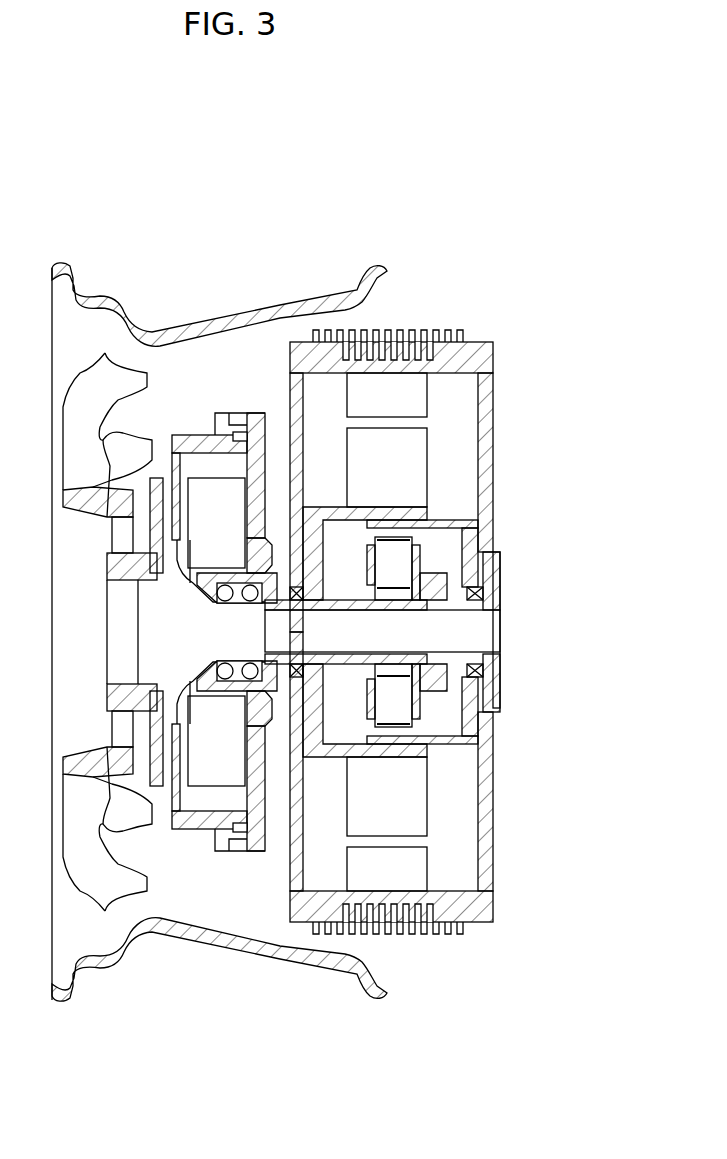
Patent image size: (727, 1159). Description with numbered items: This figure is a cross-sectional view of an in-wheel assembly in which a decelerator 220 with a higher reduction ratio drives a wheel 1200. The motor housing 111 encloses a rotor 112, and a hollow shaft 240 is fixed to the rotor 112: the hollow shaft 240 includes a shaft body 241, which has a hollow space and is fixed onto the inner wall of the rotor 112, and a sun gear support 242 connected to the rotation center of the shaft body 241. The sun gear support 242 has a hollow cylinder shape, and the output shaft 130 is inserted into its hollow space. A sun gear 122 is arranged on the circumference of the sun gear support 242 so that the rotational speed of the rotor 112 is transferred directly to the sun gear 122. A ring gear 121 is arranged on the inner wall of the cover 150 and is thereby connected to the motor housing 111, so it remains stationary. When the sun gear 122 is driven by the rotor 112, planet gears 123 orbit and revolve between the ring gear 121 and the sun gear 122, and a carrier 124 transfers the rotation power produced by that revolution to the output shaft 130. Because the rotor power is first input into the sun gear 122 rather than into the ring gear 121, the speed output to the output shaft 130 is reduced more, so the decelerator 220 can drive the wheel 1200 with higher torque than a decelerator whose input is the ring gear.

The wheel 1200 is at (120, 278).
The motor housing 111 is at (493, 388).
The rotor 112 is at (427, 443).
The ring gear 121 is at (400, 530).
The sun gear 122 is at (477, 617).
The planet gears 123 is at (405, 555).
The carrier 124 is at (418, 590).
The decelerator 220 is at (460, 616).
The output shaft 130 is at (470, 640).
The cover 150 is at (496, 690).
The hollow shaft 240 is at (436, 646).
The shaft body 241 is at (410, 757).
The sun gear support 242 is at (445, 717).